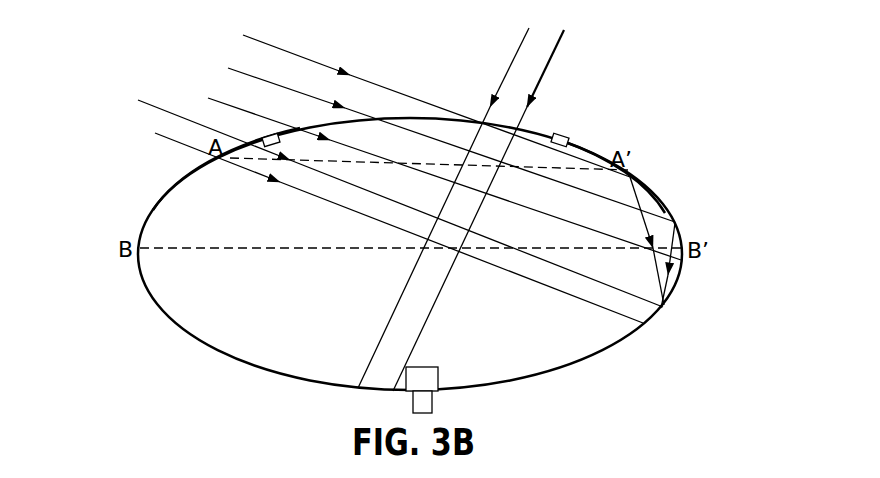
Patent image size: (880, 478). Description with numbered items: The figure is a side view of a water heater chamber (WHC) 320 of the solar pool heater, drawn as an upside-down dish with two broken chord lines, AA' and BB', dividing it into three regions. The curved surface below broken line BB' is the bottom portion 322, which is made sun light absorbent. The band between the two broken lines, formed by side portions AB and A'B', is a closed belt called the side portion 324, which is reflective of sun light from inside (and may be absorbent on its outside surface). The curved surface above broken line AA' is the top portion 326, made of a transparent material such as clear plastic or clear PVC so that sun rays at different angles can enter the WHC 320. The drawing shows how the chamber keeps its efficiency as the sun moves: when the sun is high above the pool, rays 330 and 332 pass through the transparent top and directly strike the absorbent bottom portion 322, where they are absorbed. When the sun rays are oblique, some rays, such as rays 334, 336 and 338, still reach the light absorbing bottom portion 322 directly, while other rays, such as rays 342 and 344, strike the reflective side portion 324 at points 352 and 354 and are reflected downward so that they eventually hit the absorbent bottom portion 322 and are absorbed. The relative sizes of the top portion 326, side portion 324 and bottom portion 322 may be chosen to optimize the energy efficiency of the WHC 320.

The water heater chamber 320 is at (662, 85).
The bottom portion 322 is at (410, 271).
The side portion 324 is at (404, 170).
The top portion 326 is at (415, 93).
The sun ray 330 is at (504, 210).
The sun ray 332 is at (446, 195).
The oblique sun ray 334 is at (424, 175).
The oblique sun ray 336 is at (380, 198).
The oblique sun ray 338 is at (379, 224).
The oblique sun ray 342 is at (417, 97).
The oblique sun ray 344 is at (431, 138).
The reflection point 352 is at (630, 177).
The reflection point 354 is at (677, 224).